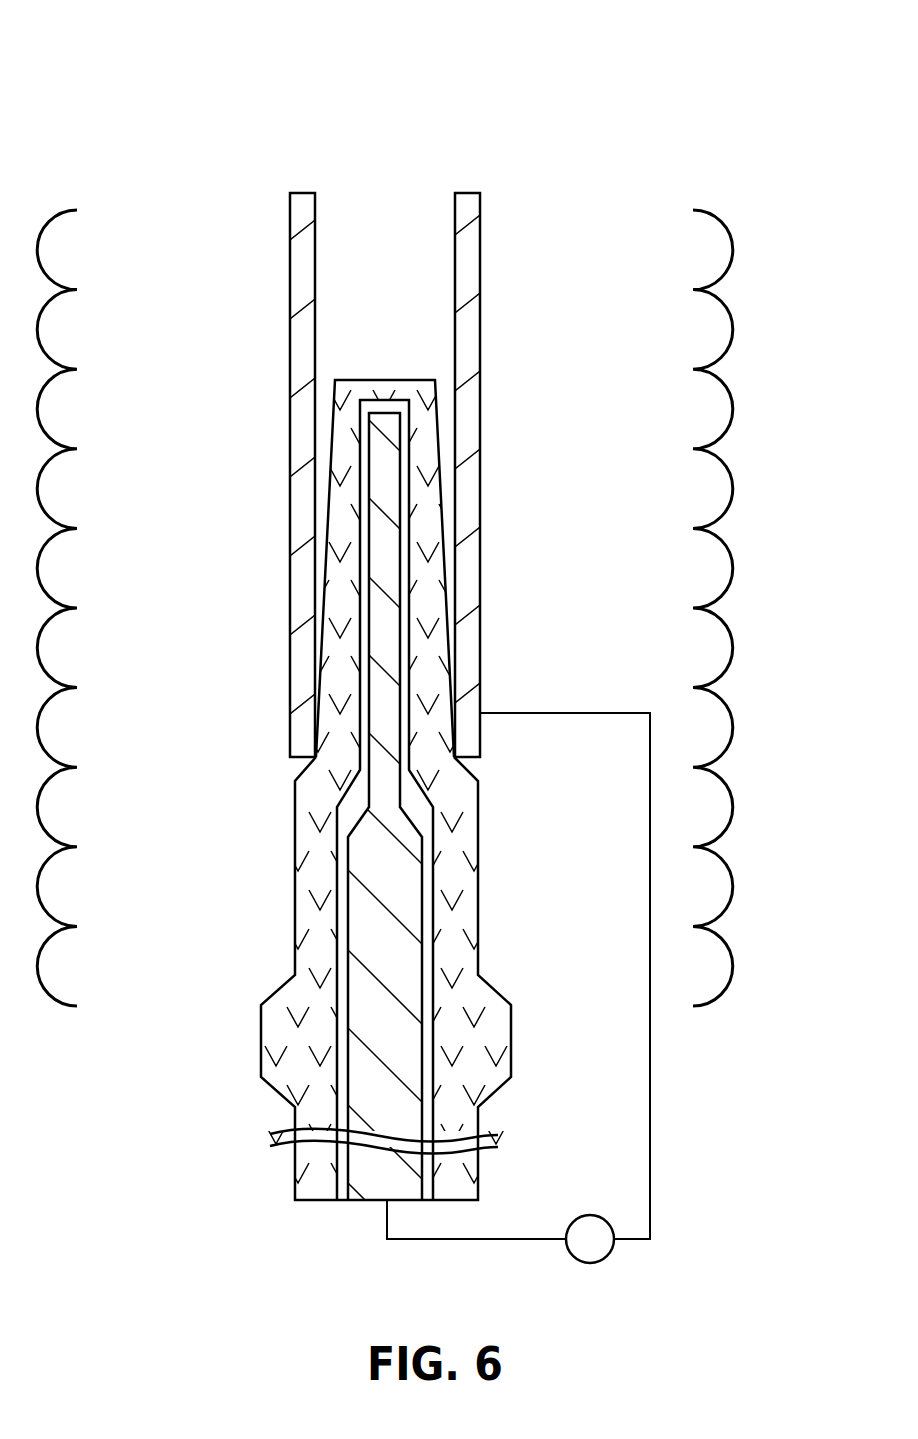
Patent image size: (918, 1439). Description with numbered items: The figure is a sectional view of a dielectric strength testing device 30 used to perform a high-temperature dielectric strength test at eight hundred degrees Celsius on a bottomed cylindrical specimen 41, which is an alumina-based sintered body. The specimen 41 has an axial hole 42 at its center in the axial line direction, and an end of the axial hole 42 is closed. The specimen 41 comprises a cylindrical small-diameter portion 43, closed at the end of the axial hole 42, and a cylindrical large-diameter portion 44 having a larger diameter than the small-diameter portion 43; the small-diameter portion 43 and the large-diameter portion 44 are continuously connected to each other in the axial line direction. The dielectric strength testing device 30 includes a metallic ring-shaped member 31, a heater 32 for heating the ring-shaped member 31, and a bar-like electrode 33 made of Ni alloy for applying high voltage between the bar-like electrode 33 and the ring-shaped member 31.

The dielectric strength testing device 30 is at (750, 85).
The ring-shaped member 31 is at (305, 270).
The heater 32 is at (728, 384).
The bar-like electrode 33 is at (377, 1183).
The specimen 41 is at (228, 1008).
The axial hole 42 is at (347, 1187).
The small-diameter portion 43 is at (338, 652).
The large-diameter portion 44 is at (313, 882).